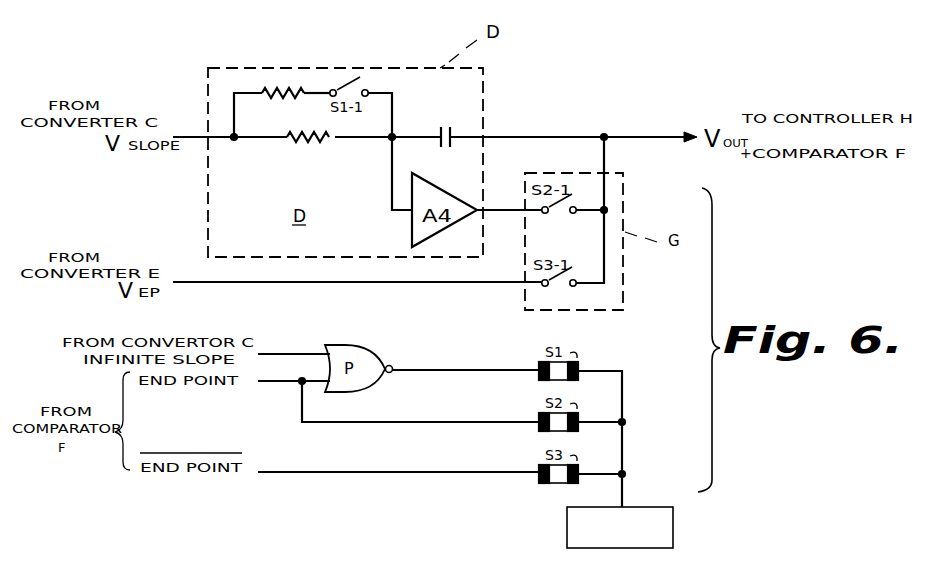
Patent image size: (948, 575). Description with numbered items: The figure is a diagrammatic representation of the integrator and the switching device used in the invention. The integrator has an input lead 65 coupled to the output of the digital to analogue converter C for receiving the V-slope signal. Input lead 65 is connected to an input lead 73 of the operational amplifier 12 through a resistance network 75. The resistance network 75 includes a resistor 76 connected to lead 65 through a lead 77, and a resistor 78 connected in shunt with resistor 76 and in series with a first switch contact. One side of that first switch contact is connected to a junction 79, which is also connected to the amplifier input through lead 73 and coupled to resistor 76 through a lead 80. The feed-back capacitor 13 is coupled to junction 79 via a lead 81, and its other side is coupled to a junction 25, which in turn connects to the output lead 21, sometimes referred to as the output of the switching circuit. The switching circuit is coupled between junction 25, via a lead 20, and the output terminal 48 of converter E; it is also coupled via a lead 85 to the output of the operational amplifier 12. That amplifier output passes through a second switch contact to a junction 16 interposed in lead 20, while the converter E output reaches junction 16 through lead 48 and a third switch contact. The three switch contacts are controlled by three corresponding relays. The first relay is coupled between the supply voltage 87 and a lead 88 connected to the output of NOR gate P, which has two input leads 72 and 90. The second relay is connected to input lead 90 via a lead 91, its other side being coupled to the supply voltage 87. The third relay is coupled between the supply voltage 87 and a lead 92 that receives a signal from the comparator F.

The input lead 65 is at (184, 135).
The resistance network 75 is at (307, 101).
The lead 77 is at (258, 139).
The resistor 78 is at (285, 92).
The resistor 76 is at (312, 140).
The lead 80 is at (346, 139).
The junction 79 is at (395, 134).
The lead 81 is at (424, 135).
The feed-back capacitor 13 is at (456, 128).
The operational amplifier 12 is at (441, 180).
The input lead 73 is at (392, 199).
The lead 85 is at (508, 212).
The junction 16 is at (623, 211).
The lead 20 is at (623, 186).
The junction 25 is at (607, 134).
The output lead 21 is at (658, 136).
The output terminal 48 is at (198, 280).
The input lead 72 is at (275, 352).
The input lead 90 is at (282, 385).
The lead 88 is at (442, 370).
The lead 91 is at (400, 420).
The lead 92 is at (360, 473).
The supply voltage 87 is at (567, 520).